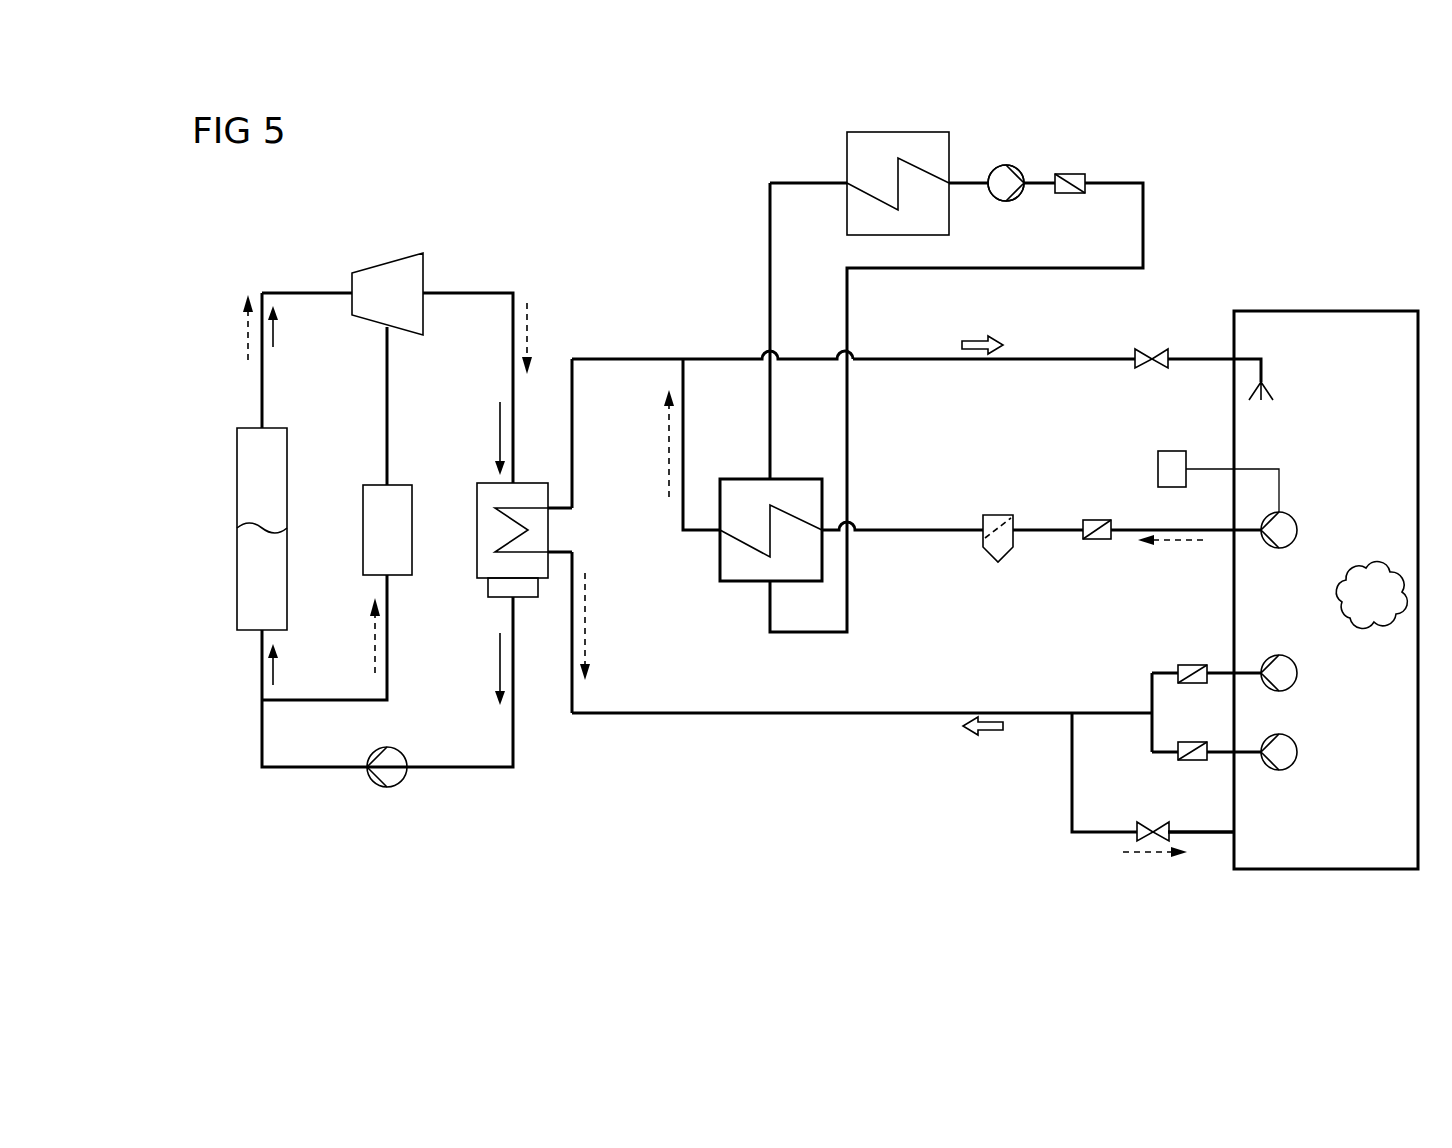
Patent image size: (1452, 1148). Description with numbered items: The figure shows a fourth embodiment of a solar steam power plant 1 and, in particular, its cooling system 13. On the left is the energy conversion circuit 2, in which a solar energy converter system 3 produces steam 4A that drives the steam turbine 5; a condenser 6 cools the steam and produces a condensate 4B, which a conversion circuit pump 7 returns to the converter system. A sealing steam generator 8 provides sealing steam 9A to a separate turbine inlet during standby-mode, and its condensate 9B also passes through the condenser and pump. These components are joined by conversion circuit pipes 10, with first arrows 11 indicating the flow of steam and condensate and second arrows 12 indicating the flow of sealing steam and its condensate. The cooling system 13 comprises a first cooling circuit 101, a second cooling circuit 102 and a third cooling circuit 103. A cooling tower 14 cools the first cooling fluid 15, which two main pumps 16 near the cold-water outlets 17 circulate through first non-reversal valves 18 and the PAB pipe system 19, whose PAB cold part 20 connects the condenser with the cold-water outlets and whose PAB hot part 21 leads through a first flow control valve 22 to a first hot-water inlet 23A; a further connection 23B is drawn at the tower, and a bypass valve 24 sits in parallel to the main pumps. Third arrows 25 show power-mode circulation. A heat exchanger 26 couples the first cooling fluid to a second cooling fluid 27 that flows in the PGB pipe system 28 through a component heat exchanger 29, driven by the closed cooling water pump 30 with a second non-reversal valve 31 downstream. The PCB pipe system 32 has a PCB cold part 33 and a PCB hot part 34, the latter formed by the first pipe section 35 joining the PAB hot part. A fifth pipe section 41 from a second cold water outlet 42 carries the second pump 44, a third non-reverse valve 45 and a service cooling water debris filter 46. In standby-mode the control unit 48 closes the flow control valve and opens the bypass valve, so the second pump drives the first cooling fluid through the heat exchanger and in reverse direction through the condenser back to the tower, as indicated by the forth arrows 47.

The solar steam power plant 1 is at (1340, 184).
The energy conversion circuit 2 is at (466, 226).
The solar energy converter system 3 is at (288, 585).
The steam 4A is at (262, 396).
The condensate 4B is at (240, 589).
The steam turbine 5 is at (385, 265).
The condenser 6 is at (476, 532).
The conversion circuit pump 7 is at (391, 789).
The sealing steam generator 8 is at (362, 532).
The sealing steam 9A is at (386, 430).
The condensate of the sealing steam 9B is at (322, 702).
The conversion circuit pipes 10 is at (306, 293).
The first arrows 11 is at (276, 326).
The second arrows 12 is at (246, 328).
The cooling system 13 is at (608, 804).
The cooling tower 14 is at (1327, 310).
The first cooling fluid 15 is at (1366, 568).
The main pumps 16 is at (1298, 672).
The cold-water outlets 17 is at (1237, 668).
The first non-reversal valves 18 is at (1194, 664).
The PAB pipe system 19 is at (862, 553).
The PAB cold part 20 is at (708, 742).
The PAB hot part 21 is at (1048, 342).
The first flow control valve 22 is at (1146, 348).
The first hot-water inlet 23A is at (1232, 352).
The outlet connection 23B is at (1232, 832).
The bypass valve 24 is at (1150, 826).
The third arrows 25 is at (628, 338).
The heat exchanger 26 is at (742, 586).
The second cooling fluid 27 is at (996, 193).
The PGB pipe system 28 is at (768, 265).
The component heat exchanger 29 is at (846, 165).
The closed cooling water pump 30 is at (1004, 165).
The second non-reversal valve 31 is at (1069, 172).
The PCB pipe system 32 is at (942, 546).
The PCB cold part 33 is at (902, 566).
The PCB hot part 34 is at (740, 560).
The first pipe section 35 is at (686, 448).
The fifth pipe section 41 is at (1048, 534).
The second cold water outlet 42 is at (1302, 560).
The second pump 44 is at (1296, 521).
The third non-reverse valve 45 is at (1097, 518).
The service cooling water debris filter 46 is at (998, 514).
The forth arrows 47 is at (667, 456).
The control unit 48 is at (1173, 450).
The first cooling circuit (PAB) 101 is at (768, 742).
The second cooling circuit (PCB) 102 is at (677, 479).
The third cooling circuit (PGB) 103 is at (910, 371).